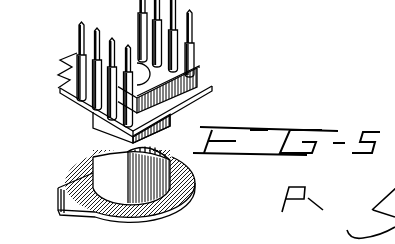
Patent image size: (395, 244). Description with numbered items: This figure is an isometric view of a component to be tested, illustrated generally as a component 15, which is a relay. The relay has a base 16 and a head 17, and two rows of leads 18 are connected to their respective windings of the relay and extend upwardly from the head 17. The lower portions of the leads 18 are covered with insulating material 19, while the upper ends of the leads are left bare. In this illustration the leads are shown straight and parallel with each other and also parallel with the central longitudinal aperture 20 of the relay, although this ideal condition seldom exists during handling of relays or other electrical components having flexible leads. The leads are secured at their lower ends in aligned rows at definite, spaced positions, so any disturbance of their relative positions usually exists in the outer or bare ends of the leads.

The component 15 is at (214, 78).
The base 16 is at (193, 187).
The head 17 is at (72, 86).
The leads 18 is at (208, 20).
The insulating material 19 is at (77, 60).
The central longitudinal aperture 20 is at (133, 44).